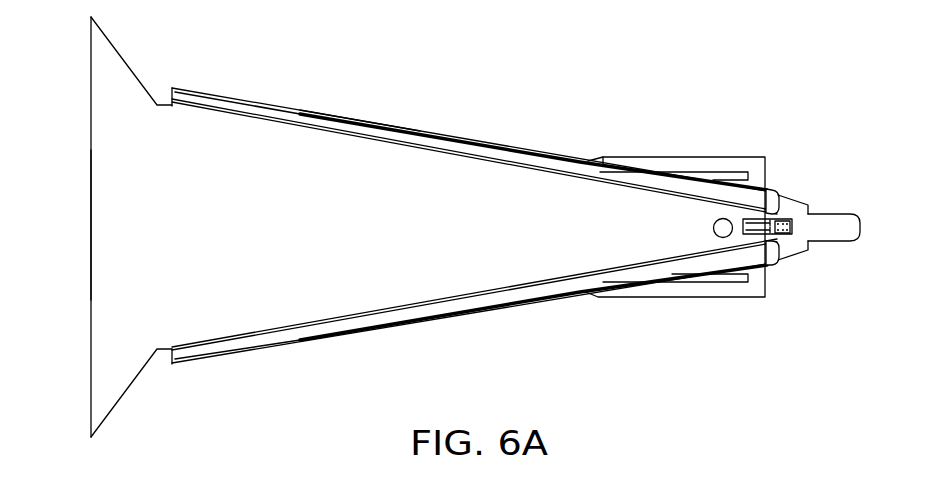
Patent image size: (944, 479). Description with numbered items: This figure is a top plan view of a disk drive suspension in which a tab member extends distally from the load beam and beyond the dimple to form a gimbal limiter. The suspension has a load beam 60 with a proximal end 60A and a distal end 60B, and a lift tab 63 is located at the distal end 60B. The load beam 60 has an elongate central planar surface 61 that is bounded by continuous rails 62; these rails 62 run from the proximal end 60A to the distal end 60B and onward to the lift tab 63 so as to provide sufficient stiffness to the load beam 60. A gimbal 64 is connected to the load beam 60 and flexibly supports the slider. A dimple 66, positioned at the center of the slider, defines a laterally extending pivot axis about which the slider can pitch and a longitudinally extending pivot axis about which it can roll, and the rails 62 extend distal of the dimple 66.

The load beam 60 is at (356, 111).
The proximal end 60A is at (90, 225).
The distal end 60B is at (827, 243).
The elongate central planar surface 61 is at (283, 234).
The continuous rails 62 is at (478, 142).
The lift tab 63 is at (830, 213).
The gimbal 64 is at (695, 297).
The dimple 66 is at (720, 218).